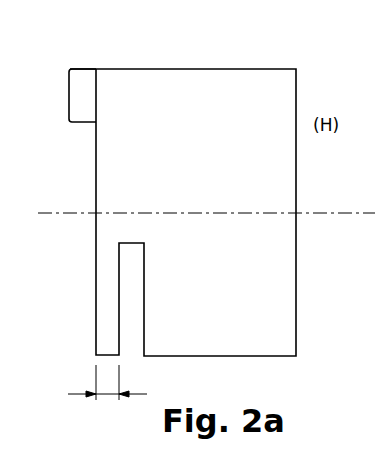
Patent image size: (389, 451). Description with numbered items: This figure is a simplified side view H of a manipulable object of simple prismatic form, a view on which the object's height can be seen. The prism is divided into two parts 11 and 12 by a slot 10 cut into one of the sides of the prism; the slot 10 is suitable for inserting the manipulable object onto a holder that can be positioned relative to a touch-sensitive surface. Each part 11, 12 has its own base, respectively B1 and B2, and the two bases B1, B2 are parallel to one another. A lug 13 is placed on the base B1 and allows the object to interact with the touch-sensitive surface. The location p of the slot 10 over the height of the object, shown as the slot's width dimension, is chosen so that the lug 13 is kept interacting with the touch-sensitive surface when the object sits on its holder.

The slot 10 is at (129, 340).
The part 11 is at (118, 62).
The part 12 is at (296, 62).
The lug 13 is at (70, 101).
The base B1 is at (96, 277).
The base B2 is at (297, 280).
The side view H is at (267, 364).
The location of the slot p is at (107, 395).